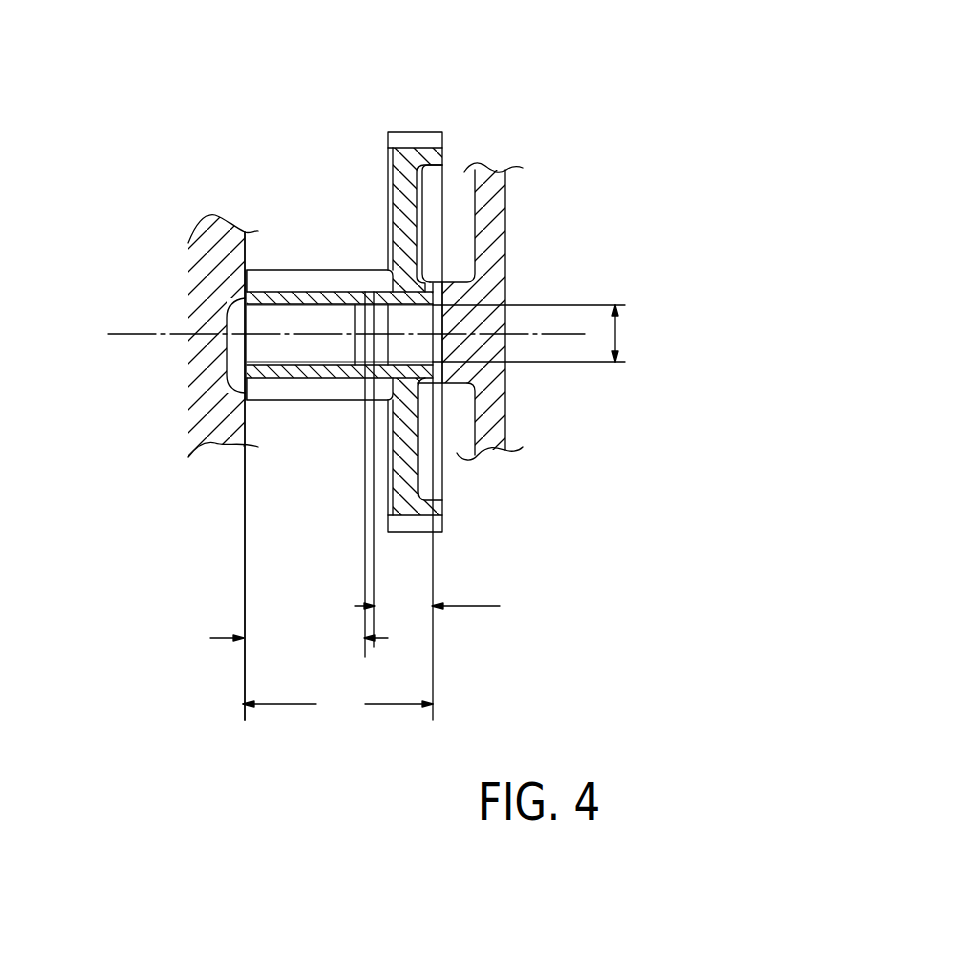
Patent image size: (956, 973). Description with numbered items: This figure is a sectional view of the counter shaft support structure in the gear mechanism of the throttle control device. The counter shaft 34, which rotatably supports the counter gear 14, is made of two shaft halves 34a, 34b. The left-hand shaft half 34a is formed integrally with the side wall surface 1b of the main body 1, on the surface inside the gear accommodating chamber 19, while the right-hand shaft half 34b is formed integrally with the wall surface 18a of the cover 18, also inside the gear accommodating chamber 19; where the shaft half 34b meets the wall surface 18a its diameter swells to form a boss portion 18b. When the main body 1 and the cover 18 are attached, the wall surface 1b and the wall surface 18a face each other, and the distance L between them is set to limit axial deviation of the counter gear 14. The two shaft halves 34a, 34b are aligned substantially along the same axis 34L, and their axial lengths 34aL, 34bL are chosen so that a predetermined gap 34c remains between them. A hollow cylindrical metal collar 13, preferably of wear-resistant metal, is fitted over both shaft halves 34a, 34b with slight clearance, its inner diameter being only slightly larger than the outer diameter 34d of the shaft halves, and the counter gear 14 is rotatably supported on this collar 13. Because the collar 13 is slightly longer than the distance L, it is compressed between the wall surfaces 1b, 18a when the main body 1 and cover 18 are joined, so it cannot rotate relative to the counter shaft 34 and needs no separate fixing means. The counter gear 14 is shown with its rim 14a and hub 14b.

The main body 1 is at (198, 452).
The side wall surface 1b is at (247, 232).
The metal collar 13 is at (272, 366).
The counter gear 14 is at (384, 153).
The pulley rim 14a is at (413, 140).
The pulley hub 14b is at (368, 275).
The cover 18 is at (502, 423).
The wall surface 18a is at (428, 268).
The boss portion 18b is at (452, 290).
The gear accommodating chamber 19 is at (307, 426).
The counter shaft 34 is at (256, 315).
The shaft half 34a is at (302, 308).
The shaft half 34b is at (415, 218).
The gap 34c is at (358, 297).
The outer diameter 34d is at (556, 333).
The axis 34L is at (320, 336).
The axial length 34aL is at (264, 638).
The axial length 34bL is at (463, 606).
The distance L is at (338, 701).